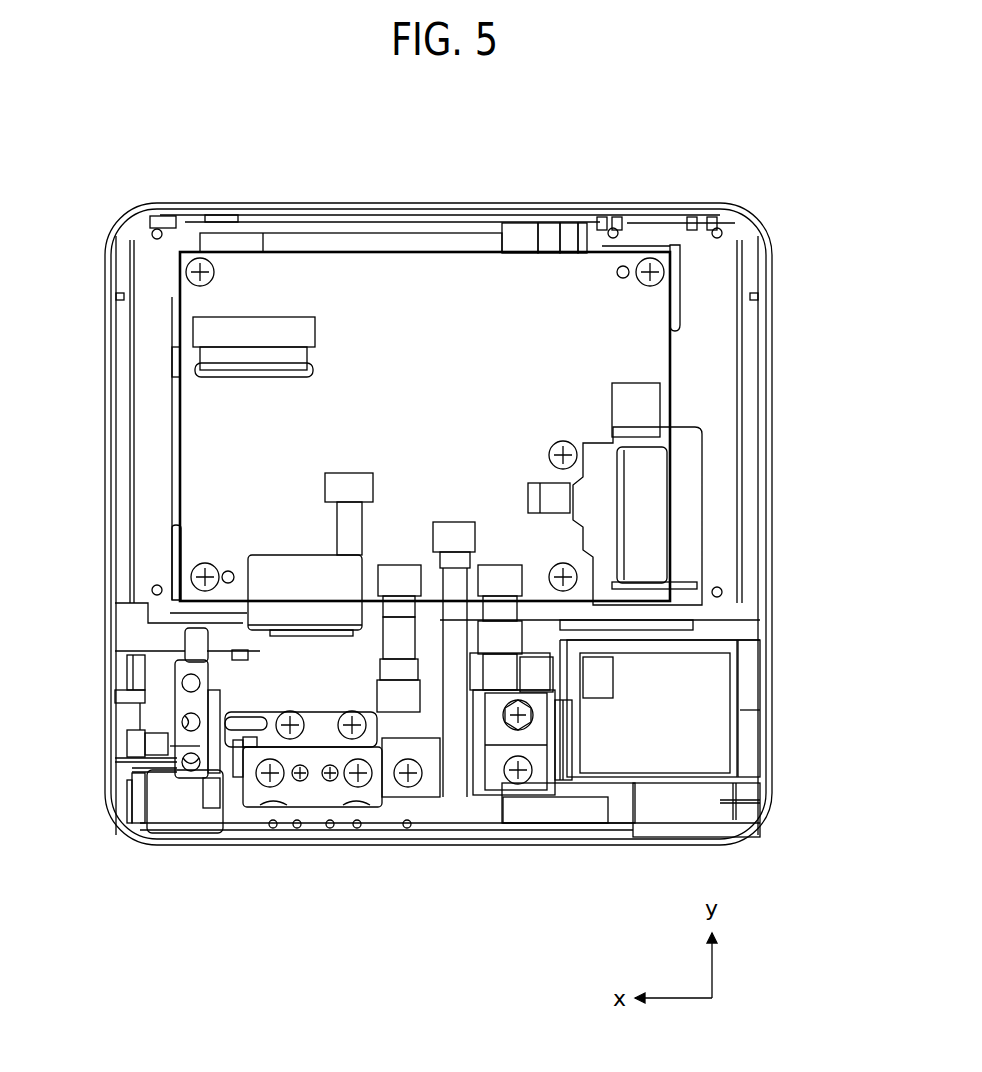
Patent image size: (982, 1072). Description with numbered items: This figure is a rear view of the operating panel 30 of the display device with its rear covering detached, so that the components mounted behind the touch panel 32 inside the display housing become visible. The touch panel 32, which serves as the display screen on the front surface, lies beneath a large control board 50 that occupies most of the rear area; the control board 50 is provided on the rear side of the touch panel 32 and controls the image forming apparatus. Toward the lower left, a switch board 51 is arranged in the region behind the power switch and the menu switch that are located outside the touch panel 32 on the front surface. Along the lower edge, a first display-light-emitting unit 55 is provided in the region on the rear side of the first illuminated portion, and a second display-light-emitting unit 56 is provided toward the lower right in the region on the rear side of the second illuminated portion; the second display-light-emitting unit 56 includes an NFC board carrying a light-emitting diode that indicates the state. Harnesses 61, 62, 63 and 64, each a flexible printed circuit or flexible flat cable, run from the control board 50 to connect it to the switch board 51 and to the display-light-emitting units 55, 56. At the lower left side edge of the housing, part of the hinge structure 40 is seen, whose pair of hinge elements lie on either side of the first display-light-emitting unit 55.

The operating panel 30 is at (786, 201).
The control board 50 is at (245, 438).
The touch panel 32 is at (693, 480).
The harness 64 is at (338, 526).
The harness 61 is at (398, 632).
The harness 63 is at (497, 622).
The switch board 51 is at (262, 678).
The hinge structure 40 is at (175, 827).
The first display-light-emitting unit 55 is at (404, 815).
The harness 62 is at (556, 800).
The second display-light-emitting unit 56 is at (700, 678).